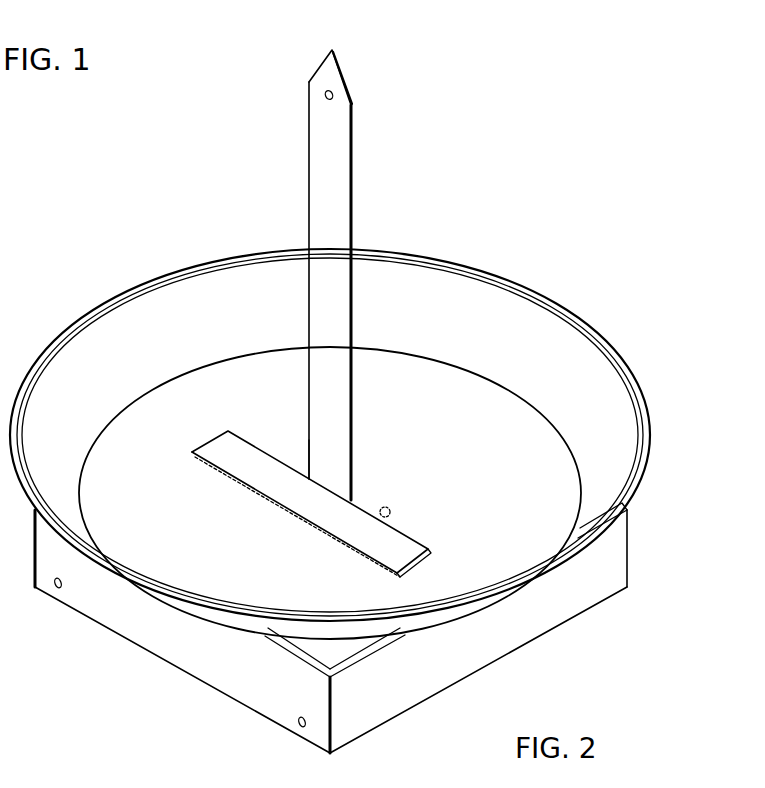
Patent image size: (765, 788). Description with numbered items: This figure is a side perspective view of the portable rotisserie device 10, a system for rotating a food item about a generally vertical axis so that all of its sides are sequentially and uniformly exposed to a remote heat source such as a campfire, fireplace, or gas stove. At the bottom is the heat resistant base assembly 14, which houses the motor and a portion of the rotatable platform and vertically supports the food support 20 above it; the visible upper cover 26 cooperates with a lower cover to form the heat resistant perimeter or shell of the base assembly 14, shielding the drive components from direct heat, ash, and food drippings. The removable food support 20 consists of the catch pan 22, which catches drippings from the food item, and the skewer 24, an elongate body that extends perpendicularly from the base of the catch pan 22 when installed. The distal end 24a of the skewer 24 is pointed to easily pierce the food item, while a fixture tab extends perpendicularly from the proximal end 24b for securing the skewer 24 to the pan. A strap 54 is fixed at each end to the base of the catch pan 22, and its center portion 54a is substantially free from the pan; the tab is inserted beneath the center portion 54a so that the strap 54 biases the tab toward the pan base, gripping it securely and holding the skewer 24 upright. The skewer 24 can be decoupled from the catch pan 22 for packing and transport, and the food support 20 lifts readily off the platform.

The portable rotisserie device 10 is at (595, 191).
The base assembly 14 is at (90, 657).
The food support 20 is at (666, 356).
The catch pan 22 is at (477, 320).
The skewer 24 is at (330, 202).
The distal end 24a is at (369, 64).
The proximal end 24b is at (382, 478).
The upper cover 26 is at (215, 667).
The strap 54 is at (400, 550).
The center portion 54a is at (236, 497).